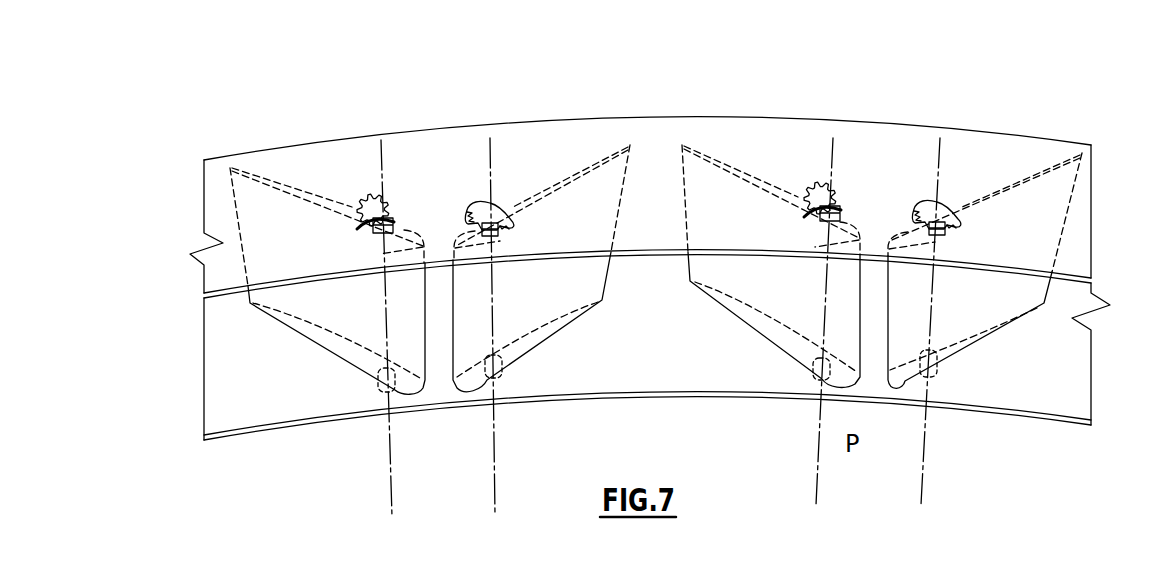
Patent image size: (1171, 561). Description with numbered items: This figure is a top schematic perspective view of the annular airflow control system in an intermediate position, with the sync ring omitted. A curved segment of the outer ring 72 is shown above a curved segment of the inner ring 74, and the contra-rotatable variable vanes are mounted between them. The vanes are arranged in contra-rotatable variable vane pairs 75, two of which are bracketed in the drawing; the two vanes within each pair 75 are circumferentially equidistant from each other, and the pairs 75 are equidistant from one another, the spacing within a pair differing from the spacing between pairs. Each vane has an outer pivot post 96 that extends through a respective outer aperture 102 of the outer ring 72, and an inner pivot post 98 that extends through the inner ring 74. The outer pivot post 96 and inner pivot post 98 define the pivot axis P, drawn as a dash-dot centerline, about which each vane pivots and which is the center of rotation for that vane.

The outer ring 72 is at (1078, 237).
The inner ring 74 is at (1077, 358).
The contra-rotatable variable vane pair 75 is at (630, 68).
The outer pivot post 96 is at (386, 220).
The inner pivot post 98 is at (818, 378).
The outer aperture 102 is at (393, 229).